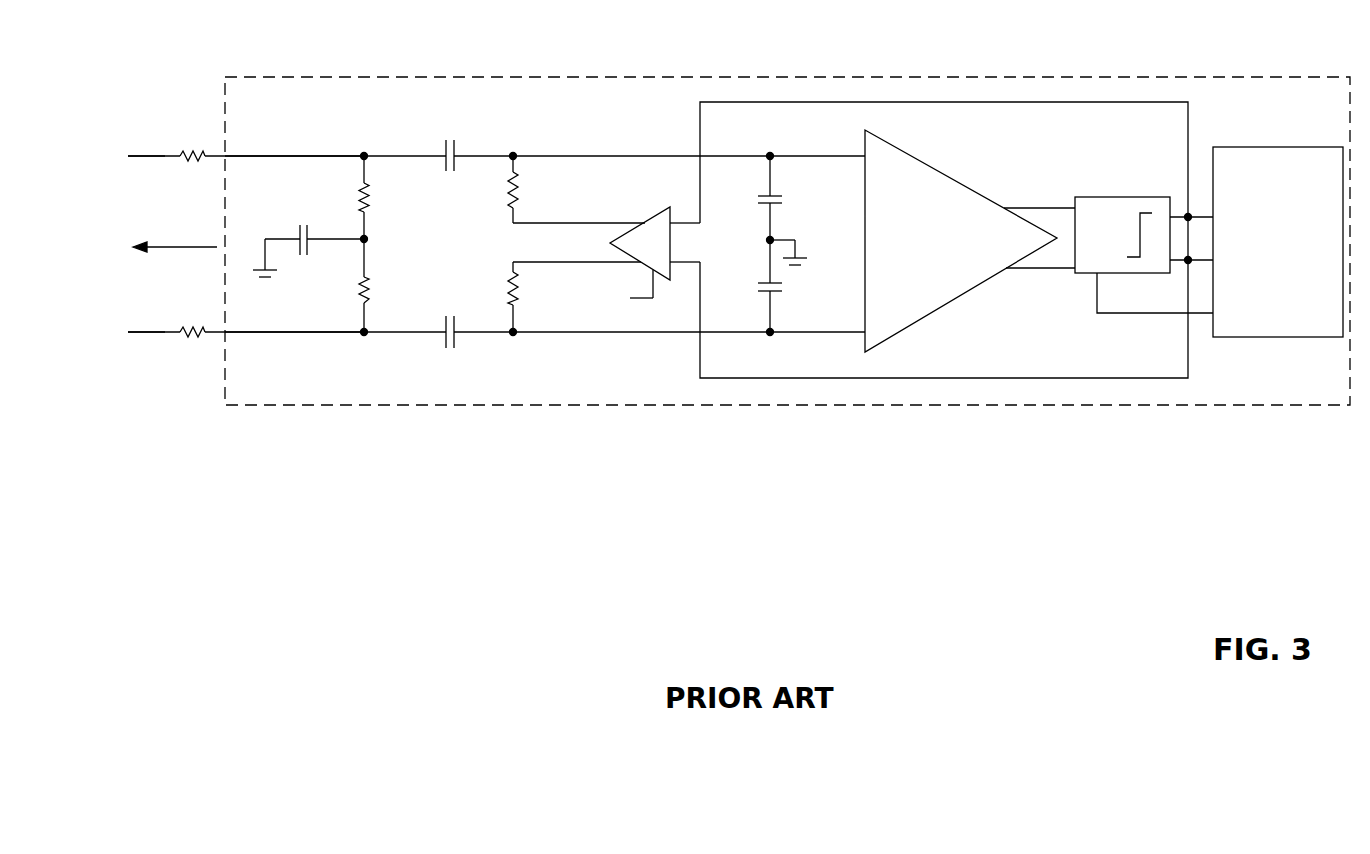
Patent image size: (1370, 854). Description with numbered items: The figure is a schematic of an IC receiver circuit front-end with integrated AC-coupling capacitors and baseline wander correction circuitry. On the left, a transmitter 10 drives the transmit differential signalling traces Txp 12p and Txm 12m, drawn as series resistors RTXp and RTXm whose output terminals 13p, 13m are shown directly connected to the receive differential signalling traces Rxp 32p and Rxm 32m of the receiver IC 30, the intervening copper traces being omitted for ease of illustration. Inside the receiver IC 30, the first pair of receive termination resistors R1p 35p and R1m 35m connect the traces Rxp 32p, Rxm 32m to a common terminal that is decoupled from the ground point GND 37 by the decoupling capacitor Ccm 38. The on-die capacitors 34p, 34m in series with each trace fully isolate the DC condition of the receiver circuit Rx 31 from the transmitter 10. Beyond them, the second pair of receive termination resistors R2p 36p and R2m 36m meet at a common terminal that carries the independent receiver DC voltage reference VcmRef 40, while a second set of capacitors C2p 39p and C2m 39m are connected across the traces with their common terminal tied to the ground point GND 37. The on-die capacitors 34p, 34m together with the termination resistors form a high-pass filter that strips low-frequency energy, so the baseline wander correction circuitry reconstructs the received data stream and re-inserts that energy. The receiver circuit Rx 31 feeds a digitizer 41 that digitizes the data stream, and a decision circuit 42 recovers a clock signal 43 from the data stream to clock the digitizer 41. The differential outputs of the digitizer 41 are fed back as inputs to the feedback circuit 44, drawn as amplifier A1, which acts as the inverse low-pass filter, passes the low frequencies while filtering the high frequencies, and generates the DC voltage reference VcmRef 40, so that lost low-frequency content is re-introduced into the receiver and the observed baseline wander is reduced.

The transmitter 10 is at (145, 248).
The transmit differential signalling trace Txp 12p is at (197, 160).
The transmit differential signalling trace Txm 12m is at (203, 336).
The positive transmission line terminal 13p is at (161, 154).
The negative transmission line terminal 13m is at (147, 335).
The receiver IC 30 is at (787, 241).
The receiver circuit Rx 31 is at (970, 241).
The receive differential signalling trace Rxp 32p is at (320, 154).
The receive differential signalling trace Rxm 32m is at (307, 336).
The on-die capacitor 34p is at (453, 138).
The on-die capacitor 34m is at (450, 349).
The receive termination resistor R1p 35p is at (370, 204).
The receive termination resistor R1m 35m is at (369, 302).
The receive termination resistor R2p 36p is at (520, 196).
The receive termination resistor R2m 36m is at (520, 293).
The ground point GND 37 is at (266, 281).
The decoupling capacitor Ccm 38 is at (302, 223).
The capacitor C2p 39p is at (777, 191).
The capacitor C2m 39m is at (782, 293).
The receiver DC voltage reference VcmRef 40 is at (648, 333).
The digitizer 41 is at (1144, 235).
The decision circuit 42 is at (1278, 242).
The clock signal 43 is at (1237, 327).
The feedback circuit 44 is at (650, 208).